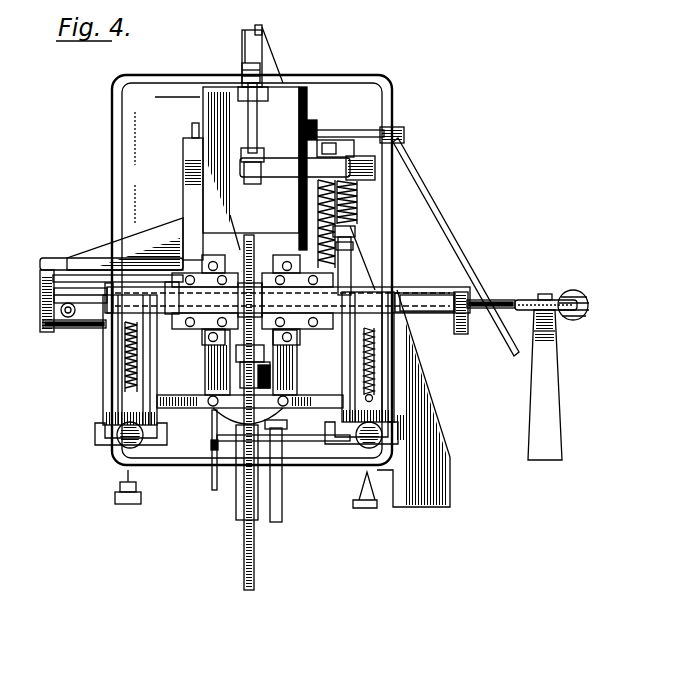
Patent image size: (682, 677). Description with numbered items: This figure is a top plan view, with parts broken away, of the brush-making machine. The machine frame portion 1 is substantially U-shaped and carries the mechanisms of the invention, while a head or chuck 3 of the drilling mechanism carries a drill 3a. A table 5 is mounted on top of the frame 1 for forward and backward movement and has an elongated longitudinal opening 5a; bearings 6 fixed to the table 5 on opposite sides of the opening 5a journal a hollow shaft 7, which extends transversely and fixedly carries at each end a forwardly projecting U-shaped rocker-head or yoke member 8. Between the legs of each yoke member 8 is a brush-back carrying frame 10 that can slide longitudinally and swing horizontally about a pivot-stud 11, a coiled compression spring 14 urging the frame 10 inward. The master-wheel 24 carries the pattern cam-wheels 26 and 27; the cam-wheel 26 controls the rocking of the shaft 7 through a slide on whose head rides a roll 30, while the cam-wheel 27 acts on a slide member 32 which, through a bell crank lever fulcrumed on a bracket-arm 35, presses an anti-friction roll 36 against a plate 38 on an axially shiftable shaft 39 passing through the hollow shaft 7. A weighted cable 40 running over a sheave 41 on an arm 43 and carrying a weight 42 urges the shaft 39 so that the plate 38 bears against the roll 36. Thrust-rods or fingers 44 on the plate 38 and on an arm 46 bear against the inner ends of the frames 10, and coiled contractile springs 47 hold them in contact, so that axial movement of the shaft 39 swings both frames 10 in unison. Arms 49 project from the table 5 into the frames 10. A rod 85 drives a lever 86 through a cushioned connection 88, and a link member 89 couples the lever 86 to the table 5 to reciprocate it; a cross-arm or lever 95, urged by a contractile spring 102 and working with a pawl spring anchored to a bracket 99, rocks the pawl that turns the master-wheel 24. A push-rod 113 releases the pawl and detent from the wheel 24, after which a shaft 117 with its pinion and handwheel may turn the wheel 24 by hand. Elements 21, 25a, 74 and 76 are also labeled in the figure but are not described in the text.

The machine frame portion 1 is at (252, 270).
The drill head or chuck 3 is at (115, 496).
The drill 3a is at (126, 477).
The table 5 is at (348, 514).
The elongated opening 5a is at (223, 229).
The bearings 6 is at (287, 300).
The hollow shaft 7 is at (271, 300).
The rocker-head or yoke member 8 is at (248, 358).
The brush-back carrying frame 10 is at (108, 418).
The pivot-stud 11 is at (374, 399).
The coiled compression spring 14 is at (138, 372).
The ball 21 is at (112, 440).
The master-wheel 24 is at (254, 550).
The post 25a is at (268, 355).
The pattern cam-wheel 26 is at (282, 518).
The pattern cam-wheel 27 is at (240, 515).
The roll 30 is at (266, 380).
The slide member 32 is at (235, 340).
The bracket-arm 35 is at (98, 258).
The anti-friction roll 36 is at (50, 332).
The plate 38 is at (40, 320).
The axially shiftable shaft 39 is at (425, 300).
The weighted cable 40 is at (510, 300).
The sheave 41 is at (540, 298).
The weight 42 is at (589, 302).
The arm 43 is at (545, 385).
The thrust-rod or finger 44 is at (100, 330).
The arm 46 is at (466, 318).
The coiled contractile spring 47 is at (72, 330).
The arm 49 is at (250, 414).
The rod 74 is at (428, 176).
The rod 76 is at (352, 128).
The rod 85 is at (348, 268).
The lever 86 is at (302, 166).
The cushioned connection 88 is at (355, 215).
The link member 89 is at (257, 122).
The cross-arm or lever 95 is at (332, 140).
The bracket or frame part 99 is at (270, 62).
The contractile spring 102 is at (325, 225).
The push-rod 113 is at (212, 455).
The shaft 117 is at (282, 470).